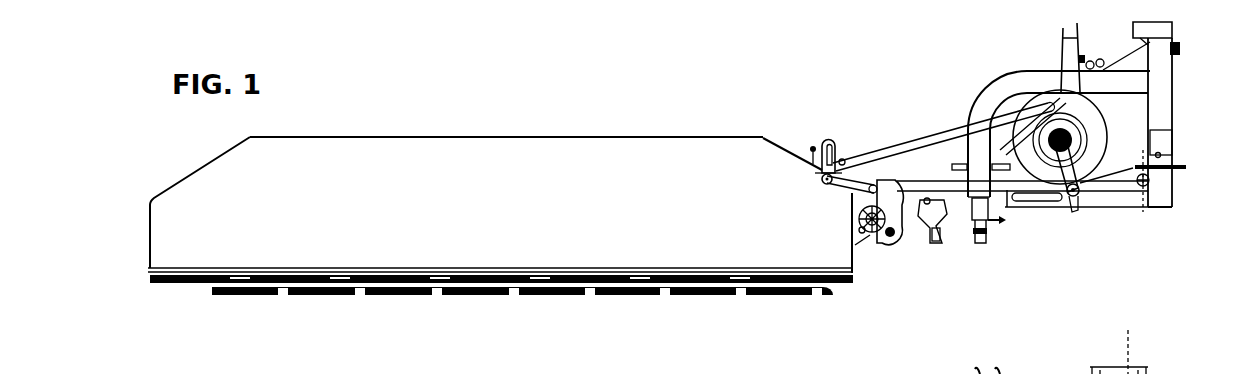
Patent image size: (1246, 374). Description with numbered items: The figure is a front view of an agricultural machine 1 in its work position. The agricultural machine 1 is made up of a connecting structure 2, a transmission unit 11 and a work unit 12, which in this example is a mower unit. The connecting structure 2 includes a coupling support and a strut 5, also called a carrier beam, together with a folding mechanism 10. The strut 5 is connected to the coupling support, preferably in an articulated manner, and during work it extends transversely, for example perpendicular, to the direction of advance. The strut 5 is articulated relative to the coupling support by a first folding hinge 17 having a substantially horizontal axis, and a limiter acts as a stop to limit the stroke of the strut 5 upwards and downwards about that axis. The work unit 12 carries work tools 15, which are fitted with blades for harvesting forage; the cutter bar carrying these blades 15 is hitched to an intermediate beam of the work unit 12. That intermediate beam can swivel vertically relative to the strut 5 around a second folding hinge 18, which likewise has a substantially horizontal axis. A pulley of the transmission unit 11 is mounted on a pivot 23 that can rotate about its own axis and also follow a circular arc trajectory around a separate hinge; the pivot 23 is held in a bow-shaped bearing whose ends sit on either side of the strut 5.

The agricultural machine 1 is at (390, 56).
The connecting structure 2 is at (856, 99).
The strut 5 is at (1023, 213).
The folding mechanism 10 is at (1009, 258).
The transmission unit 11 is at (1122, 138).
The work unit 12 is at (524, 133).
The work tools 15 is at (650, 293).
The first folding hinge 17 is at (1147, 188).
The second folding hinge 18 is at (883, 242).
The pivot 23 is at (710, 352).